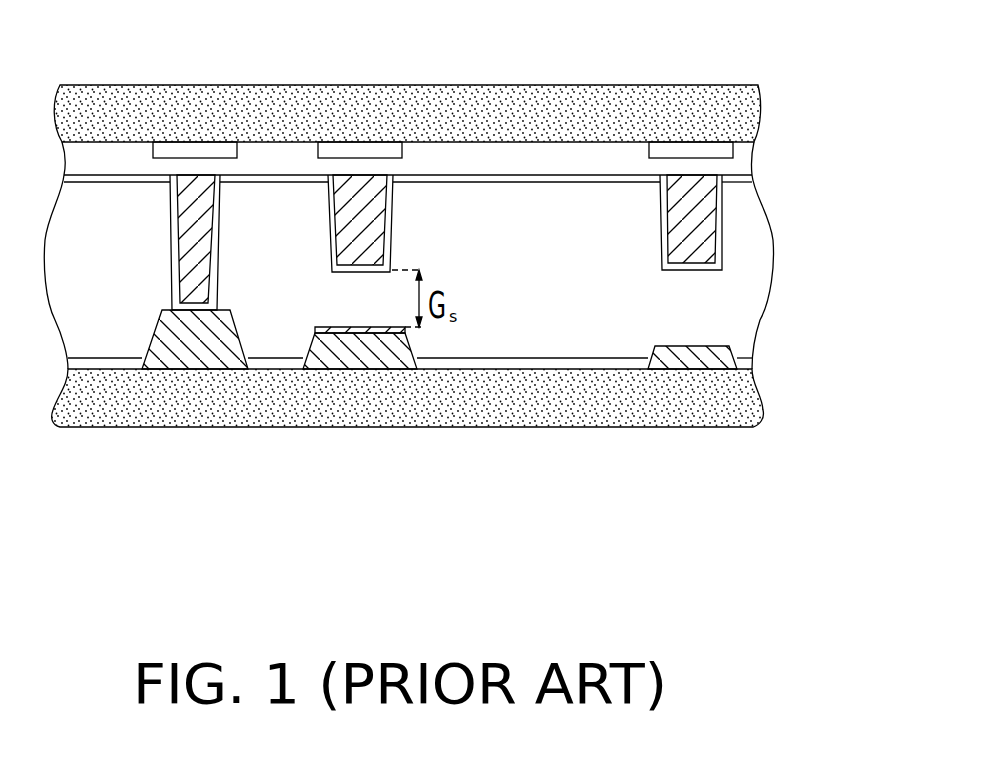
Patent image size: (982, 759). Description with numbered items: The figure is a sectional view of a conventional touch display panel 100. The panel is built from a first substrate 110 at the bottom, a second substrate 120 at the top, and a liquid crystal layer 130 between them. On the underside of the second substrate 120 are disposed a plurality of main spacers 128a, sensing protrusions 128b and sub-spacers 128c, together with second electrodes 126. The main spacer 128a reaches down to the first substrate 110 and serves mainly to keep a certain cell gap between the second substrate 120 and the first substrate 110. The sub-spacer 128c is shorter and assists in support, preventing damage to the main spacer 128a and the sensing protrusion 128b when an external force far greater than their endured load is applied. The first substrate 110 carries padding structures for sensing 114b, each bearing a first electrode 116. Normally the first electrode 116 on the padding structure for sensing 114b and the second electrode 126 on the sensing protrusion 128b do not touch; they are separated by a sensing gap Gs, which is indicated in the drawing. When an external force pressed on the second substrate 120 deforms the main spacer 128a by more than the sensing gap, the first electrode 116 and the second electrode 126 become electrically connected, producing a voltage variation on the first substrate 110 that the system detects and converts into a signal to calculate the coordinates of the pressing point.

The touch display panel 100 is at (868, 548).
The first substrate 110 is at (720, 397).
The padding structure for sensing 114b is at (362, 355).
The first electrode 116 is at (315, 328).
The second substrate 120 is at (732, 118).
The second electrode 126 is at (350, 268).
The main spacer 128a is at (183, 223).
The sensing protrusion 128b is at (353, 215).
The sub-spacer 128c is at (690, 213).
The liquid crystal layer 130 is at (728, 320).